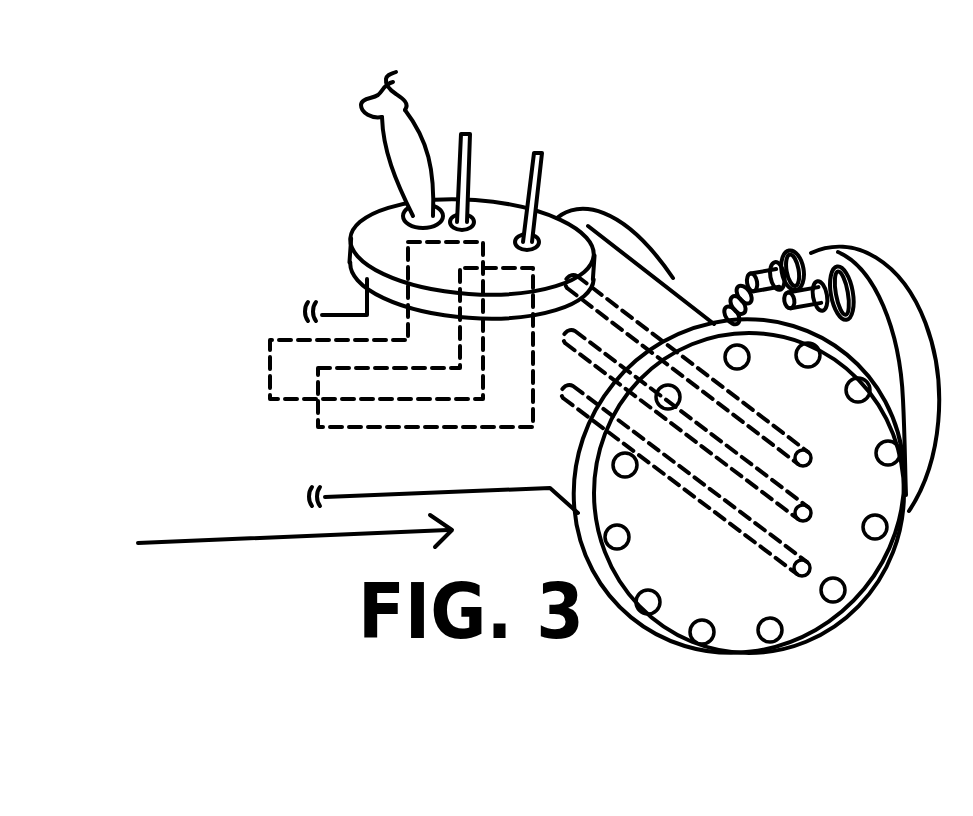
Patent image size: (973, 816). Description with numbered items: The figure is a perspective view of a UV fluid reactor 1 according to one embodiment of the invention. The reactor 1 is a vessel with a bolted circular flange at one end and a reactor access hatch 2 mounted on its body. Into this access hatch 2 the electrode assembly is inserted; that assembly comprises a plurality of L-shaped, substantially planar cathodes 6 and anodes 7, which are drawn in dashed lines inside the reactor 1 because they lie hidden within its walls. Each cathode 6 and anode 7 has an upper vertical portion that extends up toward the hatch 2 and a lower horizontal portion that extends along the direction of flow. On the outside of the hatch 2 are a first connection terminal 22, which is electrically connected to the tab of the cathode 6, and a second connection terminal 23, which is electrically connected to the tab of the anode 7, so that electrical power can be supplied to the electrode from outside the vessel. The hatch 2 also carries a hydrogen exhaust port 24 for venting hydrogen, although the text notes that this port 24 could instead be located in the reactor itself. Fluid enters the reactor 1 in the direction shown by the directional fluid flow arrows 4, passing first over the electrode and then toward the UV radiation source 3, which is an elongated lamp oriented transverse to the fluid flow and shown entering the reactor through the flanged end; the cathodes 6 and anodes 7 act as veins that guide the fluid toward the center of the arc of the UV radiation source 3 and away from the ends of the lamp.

The UV reactor 1 is at (750, 218).
The reactor access hatch 2 is at (378, 233).
The UV radiation source 3 is at (812, 568).
The directional fluid flow arrows 4 is at (295, 561).
The cathode 6 is at (268, 383).
The anode 7 is at (385, 432).
The first connection terminal 22 is at (466, 137).
The second connection terminal 23 is at (538, 154).
The hydrogen exhaust port 24 is at (418, 149).